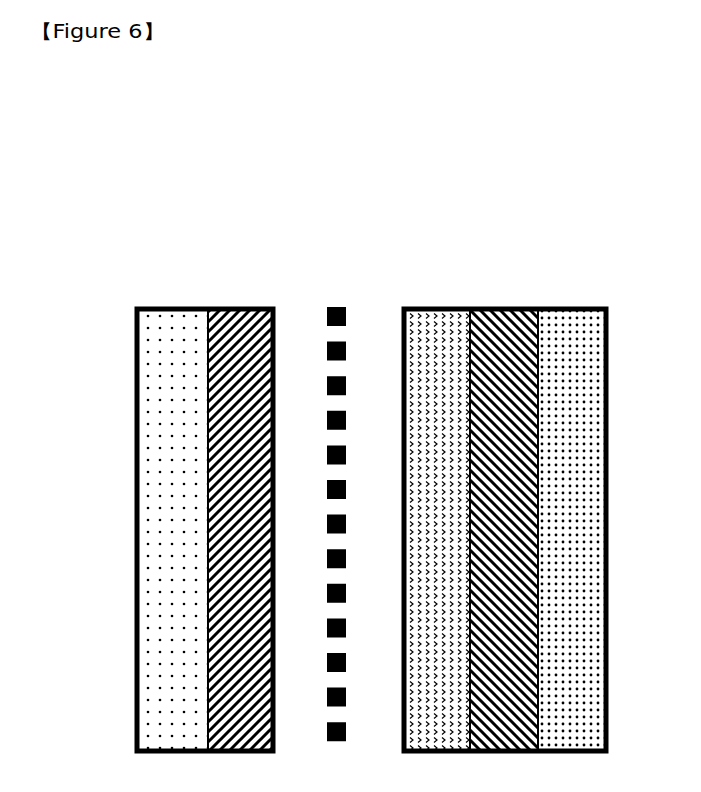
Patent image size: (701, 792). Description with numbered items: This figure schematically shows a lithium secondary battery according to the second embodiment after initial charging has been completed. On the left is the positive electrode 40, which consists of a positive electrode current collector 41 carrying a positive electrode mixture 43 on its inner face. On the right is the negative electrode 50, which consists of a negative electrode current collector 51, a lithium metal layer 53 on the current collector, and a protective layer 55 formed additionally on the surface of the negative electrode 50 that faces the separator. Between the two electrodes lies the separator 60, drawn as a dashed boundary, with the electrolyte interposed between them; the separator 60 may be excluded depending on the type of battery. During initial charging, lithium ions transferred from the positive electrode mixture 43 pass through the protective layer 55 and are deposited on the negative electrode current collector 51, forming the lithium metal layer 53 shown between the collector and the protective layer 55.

The positive electrode 40 is at (272, 148).
The positive electrode current collector 41 is at (175, 307).
The positive electrode mixture 43 is at (242, 307).
The separator 60 is at (340, 307).
The negative electrode 50 is at (582, 148).
The protective layer 55 is at (440, 307).
The lithium metal layer 53 is at (507, 307).
The negative electrode current collector 51 is at (575, 307).